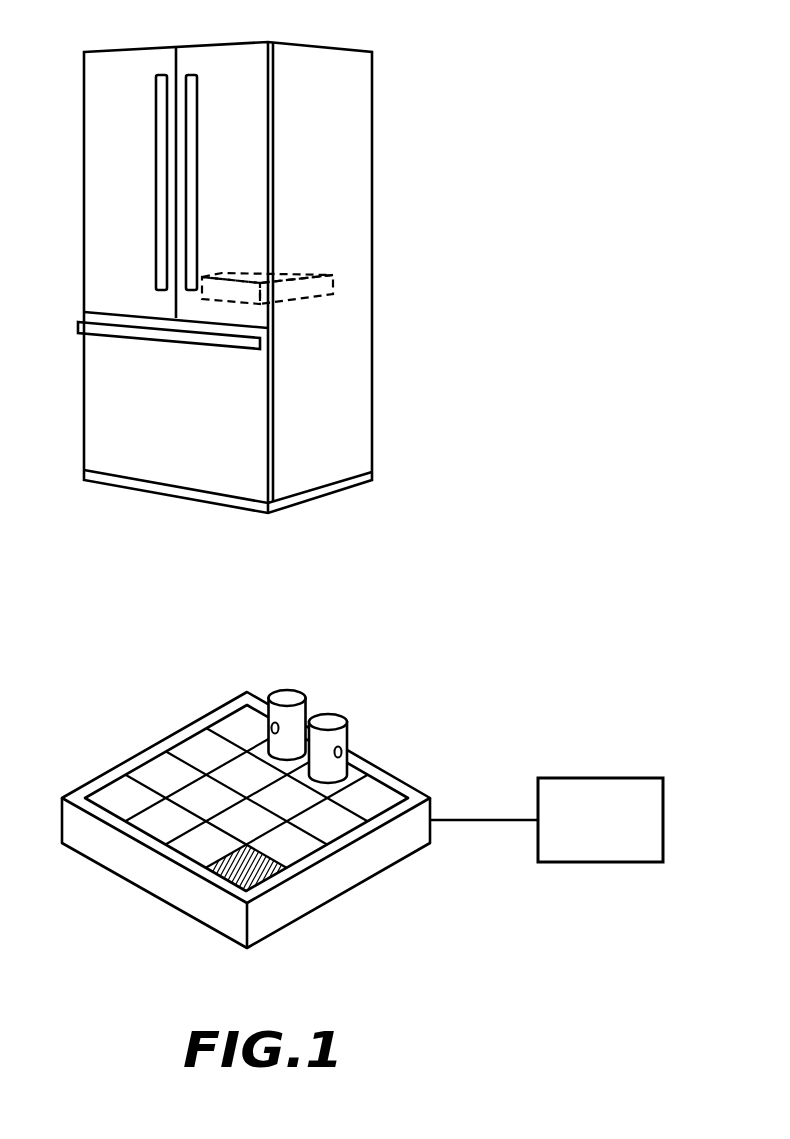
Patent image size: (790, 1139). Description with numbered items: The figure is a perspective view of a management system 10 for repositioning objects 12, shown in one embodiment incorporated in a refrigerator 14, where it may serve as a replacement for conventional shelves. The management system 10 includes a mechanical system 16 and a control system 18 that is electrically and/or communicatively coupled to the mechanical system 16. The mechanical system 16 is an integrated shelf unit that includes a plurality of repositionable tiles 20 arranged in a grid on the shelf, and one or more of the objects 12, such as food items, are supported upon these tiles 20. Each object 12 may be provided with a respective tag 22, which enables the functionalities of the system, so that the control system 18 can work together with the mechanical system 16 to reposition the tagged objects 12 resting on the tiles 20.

The management system 10 is at (352, 277).
The object 12 is at (286, 693).
The refrigerator 14 is at (358, 102).
The mechanical system 16 is at (153, 897).
The control system 18 is at (628, 778).
The repositionable tile 20 is at (157, 773).
The tag 22 is at (271, 728).